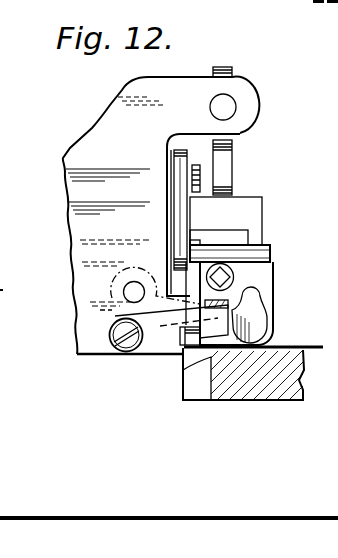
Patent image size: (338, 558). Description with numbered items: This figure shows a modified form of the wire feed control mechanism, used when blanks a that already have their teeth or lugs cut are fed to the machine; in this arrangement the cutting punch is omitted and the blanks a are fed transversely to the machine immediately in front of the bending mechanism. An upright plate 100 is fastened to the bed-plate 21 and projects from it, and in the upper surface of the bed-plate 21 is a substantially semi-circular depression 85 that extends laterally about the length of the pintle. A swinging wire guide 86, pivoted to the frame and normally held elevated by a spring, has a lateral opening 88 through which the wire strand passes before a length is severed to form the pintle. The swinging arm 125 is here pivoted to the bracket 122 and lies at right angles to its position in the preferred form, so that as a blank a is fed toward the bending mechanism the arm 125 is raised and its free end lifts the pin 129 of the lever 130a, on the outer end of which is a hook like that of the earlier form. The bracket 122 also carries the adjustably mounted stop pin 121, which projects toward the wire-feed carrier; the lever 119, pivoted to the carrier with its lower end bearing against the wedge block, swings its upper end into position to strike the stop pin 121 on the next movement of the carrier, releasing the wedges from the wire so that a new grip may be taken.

The stop pin 121 is at (235, 100).
The lever 130a is at (181, 184).
The lever 119 is at (230, 160).
The bracket 122 is at (161, 215).
The pin 129 is at (264, 250).
The upright plate 100 is at (172, 292).
The opening 88 is at (214, 327).
The swinging arm 125 is at (248, 323).
The blank a is at (309, 346).
The bed-plate 21 is at (296, 379).
The swinging wire guide 86 is at (152, 342).
The depression 85 is at (198, 368).